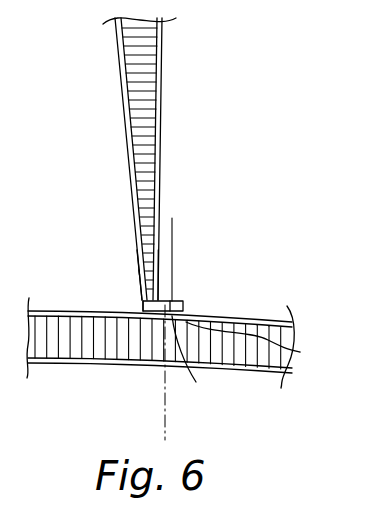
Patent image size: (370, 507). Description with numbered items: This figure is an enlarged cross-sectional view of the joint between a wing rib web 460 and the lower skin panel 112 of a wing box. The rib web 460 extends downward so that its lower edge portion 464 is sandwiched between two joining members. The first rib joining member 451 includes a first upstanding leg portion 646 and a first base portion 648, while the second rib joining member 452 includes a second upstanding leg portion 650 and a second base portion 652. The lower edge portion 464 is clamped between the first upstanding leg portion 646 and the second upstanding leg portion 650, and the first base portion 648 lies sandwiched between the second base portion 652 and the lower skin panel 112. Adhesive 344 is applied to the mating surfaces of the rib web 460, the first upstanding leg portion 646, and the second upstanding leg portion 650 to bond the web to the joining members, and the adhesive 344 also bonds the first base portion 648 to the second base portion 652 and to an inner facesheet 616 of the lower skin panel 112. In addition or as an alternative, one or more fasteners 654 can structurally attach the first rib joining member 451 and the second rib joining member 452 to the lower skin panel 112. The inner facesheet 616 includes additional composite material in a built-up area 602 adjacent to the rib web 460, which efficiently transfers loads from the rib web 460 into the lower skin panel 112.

The rib web 460 is at (162, 58).
The lower edge portion 464 is at (160, 298).
The second upstanding leg portion 650 is at (170, 298).
The second rib joining member 452 is at (176, 300).
The second base portion 652 is at (180, 300).
The built-up area 602 is at (222, 312).
The inner facesheet 616 is at (265, 318).
The first base portion 648 is at (259, 344).
The lower skin panel 112 is at (248, 373).
The fasteners 654 is at (202, 359).
The adhesive 344 is at (140, 289).
The first rib joining member 451 is at (141, 300).
The first upstanding leg portion 646 is at (143, 273).